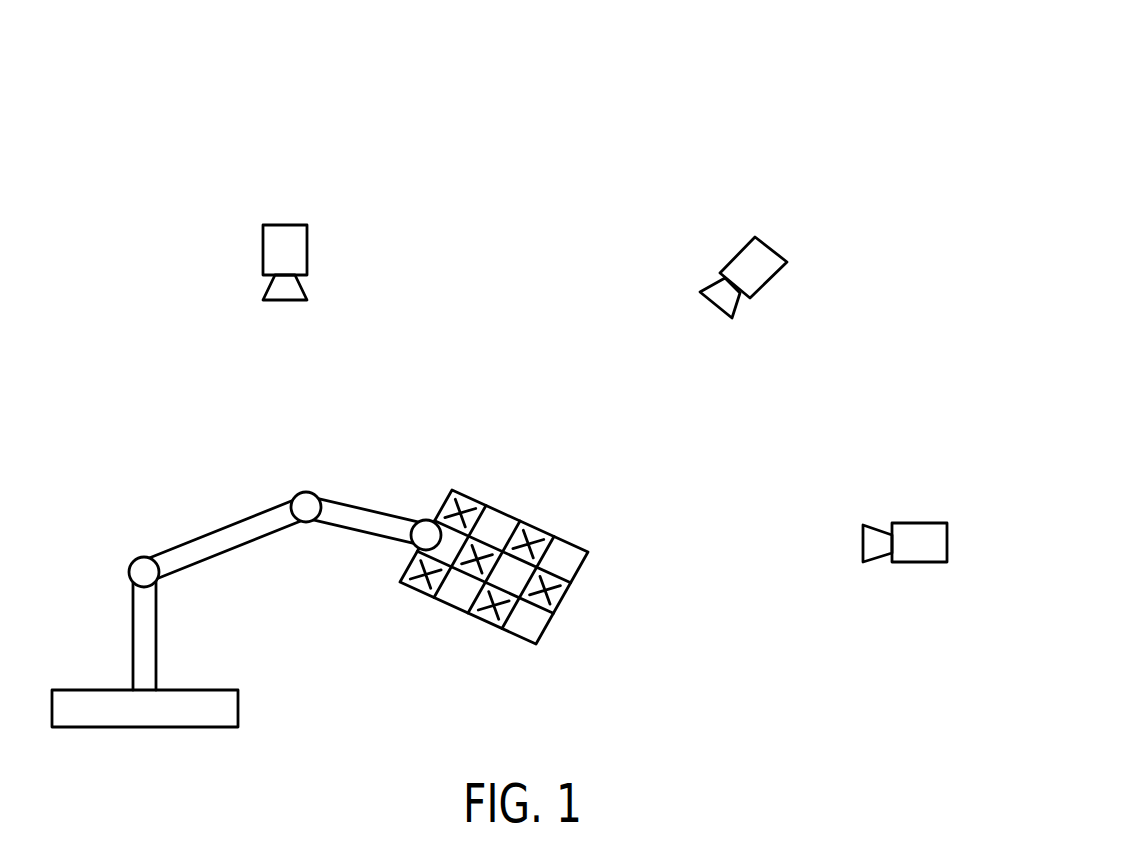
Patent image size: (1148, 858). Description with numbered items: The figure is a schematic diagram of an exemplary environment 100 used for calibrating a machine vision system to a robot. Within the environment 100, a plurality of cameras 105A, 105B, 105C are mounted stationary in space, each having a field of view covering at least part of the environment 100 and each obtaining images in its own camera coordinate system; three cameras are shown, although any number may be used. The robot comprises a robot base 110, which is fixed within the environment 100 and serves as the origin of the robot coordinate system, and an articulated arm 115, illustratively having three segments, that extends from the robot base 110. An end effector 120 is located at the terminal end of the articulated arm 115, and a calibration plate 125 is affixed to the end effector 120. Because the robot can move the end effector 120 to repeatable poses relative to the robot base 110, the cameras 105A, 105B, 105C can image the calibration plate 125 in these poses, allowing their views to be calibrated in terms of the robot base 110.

The environment 100 is at (833, 95).
The camera 105A is at (307, 248).
The camera 105B is at (770, 280).
The camera 105C is at (917, 562).
The robot base 110 is at (238, 706).
The articulated arm 115 is at (220, 523).
The end effector 120 is at (426, 520).
The calibration plate 125 is at (503, 512).